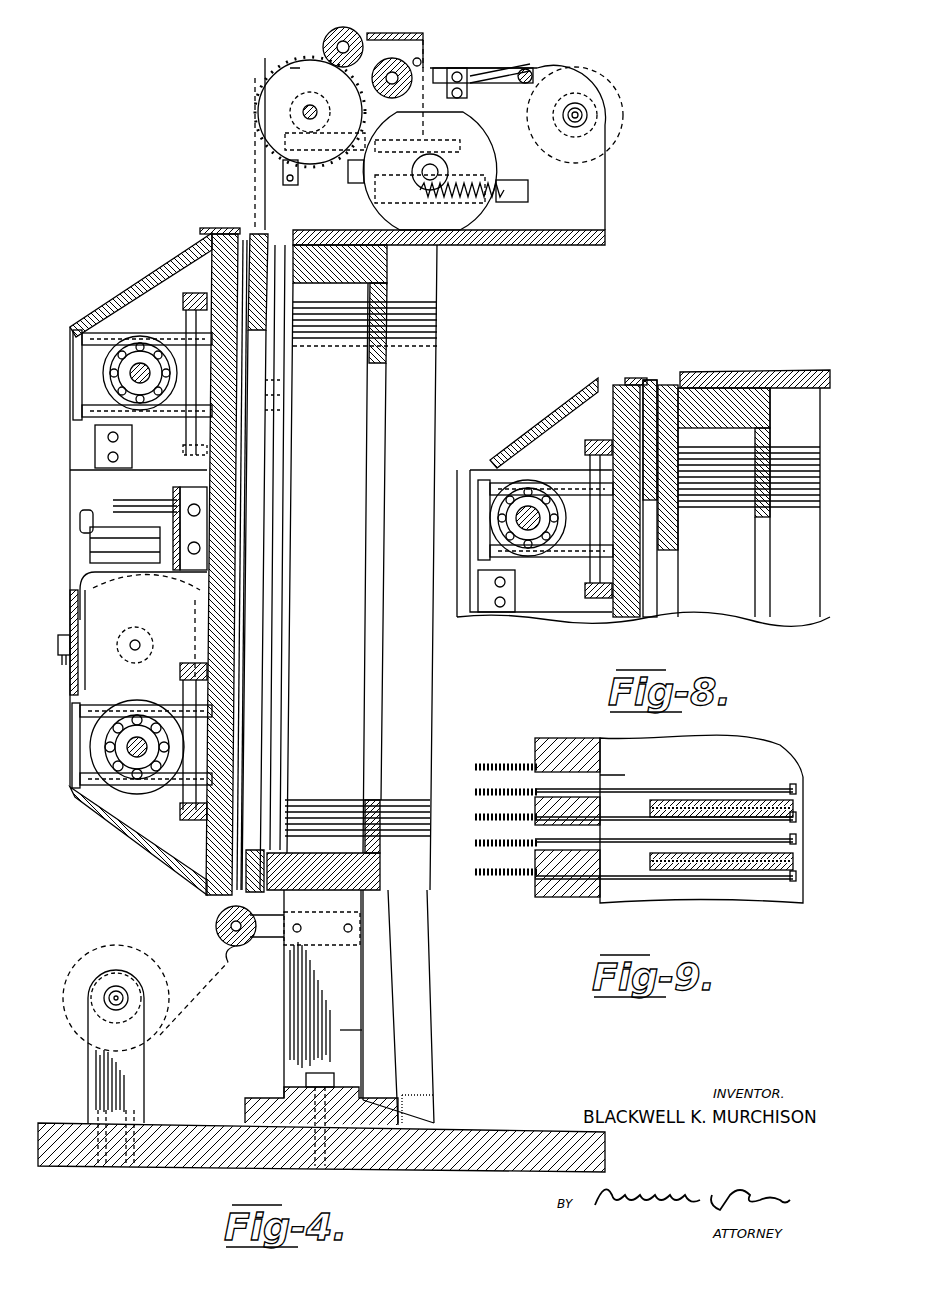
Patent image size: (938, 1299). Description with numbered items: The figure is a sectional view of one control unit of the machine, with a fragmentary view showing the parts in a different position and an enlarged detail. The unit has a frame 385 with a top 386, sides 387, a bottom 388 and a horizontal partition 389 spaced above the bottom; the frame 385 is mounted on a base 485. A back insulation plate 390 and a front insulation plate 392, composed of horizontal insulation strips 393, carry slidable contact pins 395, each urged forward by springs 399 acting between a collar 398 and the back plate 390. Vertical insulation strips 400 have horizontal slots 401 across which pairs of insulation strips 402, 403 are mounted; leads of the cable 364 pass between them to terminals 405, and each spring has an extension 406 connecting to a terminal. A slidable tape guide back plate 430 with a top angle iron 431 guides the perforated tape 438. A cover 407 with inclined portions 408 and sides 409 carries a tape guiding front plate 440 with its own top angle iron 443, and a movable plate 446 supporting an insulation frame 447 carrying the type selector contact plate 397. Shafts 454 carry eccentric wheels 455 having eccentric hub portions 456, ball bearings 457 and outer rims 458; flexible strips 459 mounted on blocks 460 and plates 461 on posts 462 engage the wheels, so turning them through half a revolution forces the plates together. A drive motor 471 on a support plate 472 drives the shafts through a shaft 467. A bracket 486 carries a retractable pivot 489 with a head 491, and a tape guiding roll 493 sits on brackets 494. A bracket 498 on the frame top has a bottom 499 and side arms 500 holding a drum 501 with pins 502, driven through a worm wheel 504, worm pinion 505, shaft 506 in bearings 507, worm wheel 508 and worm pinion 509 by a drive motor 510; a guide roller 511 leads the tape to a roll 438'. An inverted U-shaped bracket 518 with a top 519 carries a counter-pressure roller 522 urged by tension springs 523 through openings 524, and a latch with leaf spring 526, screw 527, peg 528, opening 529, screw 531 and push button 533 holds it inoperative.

In FIG. 4, the cable 364 is at (430, 981).
In FIG. 4, the frame 385 is at (378, 704).
In FIG. 8, the frame 385 is at (690, 626).
In FIG. 4, the top 386 is at (384, 262).
In FIG. 8, the top 386 is at (716, 387).
In FIG. 4, the sides 387 is at (355, 516).
In FIG. 4, the bottom 388 is at (251, 1098).
In FIG. 4, the horizontal partition 389 is at (306, 896).
In FIG. 4, the back insulation plate 390 is at (384, 650).
In FIG. 8, the back insulation plate 390 is at (766, 601).
In FIG. 9, the back insulation plate 390 is at (481, 878).
In FIG. 4, the front insulation plate 392 is at (305, 563).
In FIG. 8, the front insulation plate 392 is at (691, 557).
In FIG. 4, the horizontal insulation strips 393 is at (286, 772).
In FIG. 8, the horizontal insulation strips 393 is at (690, 526).
In FIG. 4, the contact pins 395 is at (475, 843).
In FIG. 9, the contact pins 395 is at (475, 843).
In FIG. 4, the type selector contact plate 397 is at (238, 622).
In FIG. 8, the type selector contact plate 397 is at (663, 621).
In FIG. 4, the collar 398 is at (298, 366).
In FIG. 8, the collar 398 is at (690, 506).
In FIG. 9, the springs 399 is at (500, 880).
In FIG. 4, the vertical insulation strips 400 is at (426, 722).
In FIG. 8, the vertical insulation strips 400 is at (749, 502).
In FIG. 9, the vertical insulation strips 400 is at (640, 746).
In FIG. 4, the horizontal slots 401 is at (438, 353).
In FIG. 8, the horizontal slots 401 is at (792, 510).
In FIG. 9, the horizontal slots 401 is at (700, 800).
In FIG. 9, the insulation strips 402 is at (655, 795).
In FIG. 9, the insulation strips 403 is at (797, 868).
In FIG. 9, the terminals 405 is at (784, 784).
In FIG. 9, the extension 406 is at (690, 770).
In FIG. 4, the cover 407 is at (152, 262).
In FIG. 8, the cover 407 is at (526, 419).
In FIG. 4, the inclined top and bottom portions 408 is at (136, 297).
In FIG. 8, the inclined top and bottom portions 408 is at (561, 400).
In FIG. 4, the sides 409 is at (96, 800).
In FIG. 8, the sides 409 is at (501, 441).
In FIG. 4, the tape guide back plate 430 is at (250, 453).
In FIG. 8, the tape guide back plate 430 is at (656, 573).
In FIG. 4, the top angle iron 431 is at (259, 232).
In FIG. 8, the top angle iron 431 is at (656, 379).
In FIG. 8, the perforated tape 438 is at (677, 481).
In FIG. 4, the roll 438' is at (600, 106).
In FIG. 4, the tape guiding front plate 440 is at (245, 476).
In FIG. 8, the tape guiding front plate 440 is at (646, 591).
In FIG. 4, the top angle iron 443 is at (228, 232).
In FIG. 8, the top angle iron 443 is at (626, 383).
In FIG. 4, the movable plate 446 is at (194, 614).
In FIG. 8, the movable plate 446 is at (602, 620).
In FIG. 4, the insulation frame 447 is at (196, 606).
In FIG. 8, the insulation frame 447 is at (616, 626).
In FIG. 4, the shafts 454 is at (146, 350).
In FIG. 8, the shafts 454 is at (526, 532).
In FIG. 4, the eccentric wheels 455 is at (95, 440).
In FIG. 8, the eccentric wheels 455 is at (502, 614).
In FIG. 4, the eccentric hub portions 456 is at (86, 779).
In FIG. 4, the ball bearings 457 is at (97, 760).
In FIG. 4, the outer rims 458 is at (106, 786).
In FIG. 8, the outer rims 458 is at (518, 541).
In FIG. 4, the flexible strips 459 is at (190, 294).
In FIG. 8, the flexible strips 459 is at (585, 470).
In FIG. 4, the blocks 460 is at (214, 232).
In FIG. 8, the blocks 460 is at (630, 379).
In FIG. 4, the plates 461 is at (75, 356).
In FIG. 8, the plates 461 is at (480, 481).
In FIG. 4, the posts 462 is at (121, 331).
In FIG. 8, the posts 462 is at (496, 463).
In FIG. 4, the shaft 467 is at (116, 681).
In FIG. 4, the drive motor 471 is at (86, 580).
In FIG. 4, the support plate 472 is at (70, 622).
In FIG. 4, the base 485 is at (527, 1135).
In FIG. 4, the bracket 486 is at (146, 1076).
In FIG. 4, the retractable pivot 489 is at (588, 115).
In FIG. 4, the head 491 is at (596, 133).
In FIG. 4, the tape guiding roll 493 is at (230, 982).
In FIG. 4, the brackets 494 is at (239, 947).
In FIG. 4, the bracket 498 is at (568, 247).
In FIG. 8, the bracket 498 is at (800, 371).
In FIG. 4, the bottom 499 is at (606, 238).
In FIG. 4, the side arms 500 is at (606, 187).
In FIG. 4, the drum 501 is at (300, 60).
In FIG. 4, the pins 502 is at (262, 88).
In FIG. 4, the worm wheel 504 is at (305, 108).
In FIG. 4, the worm pinion 505 is at (300, 133).
In FIG. 4, the shaft 506 is at (339, 174).
In FIG. 4, the bearings 507 is at (283, 170).
In FIG. 4, the worm wheel 508 is at (470, 71).
In FIG. 4, the worm pinion 509 is at (441, 206).
In FIG. 4, the drive motor 510 is at (472, 140).
In FIG. 4, the guide roller 511 is at (431, 128).
In FIG. 4, the inverted U-shaped bracket 518 is at (462, 23).
In FIG. 4, the top 519 is at (372, 33).
In FIG. 4, the counter-pressure roller 522 is at (333, 32).
In FIG. 4, the tension springs 523 is at (527, 197).
In FIG. 4, the openings 524 is at (521, 186).
In FIG. 4, the leaf spring 526 is at (490, 72).
In FIG. 4, the screw 527 is at (532, 74).
In FIG. 4, the peg 528 is at (462, 47).
In FIG. 4, the opening 529 is at (467, 35).
In FIG. 4, the screw 531 is at (470, 93).
In FIG. 4, the push button 533 is at (468, 74).